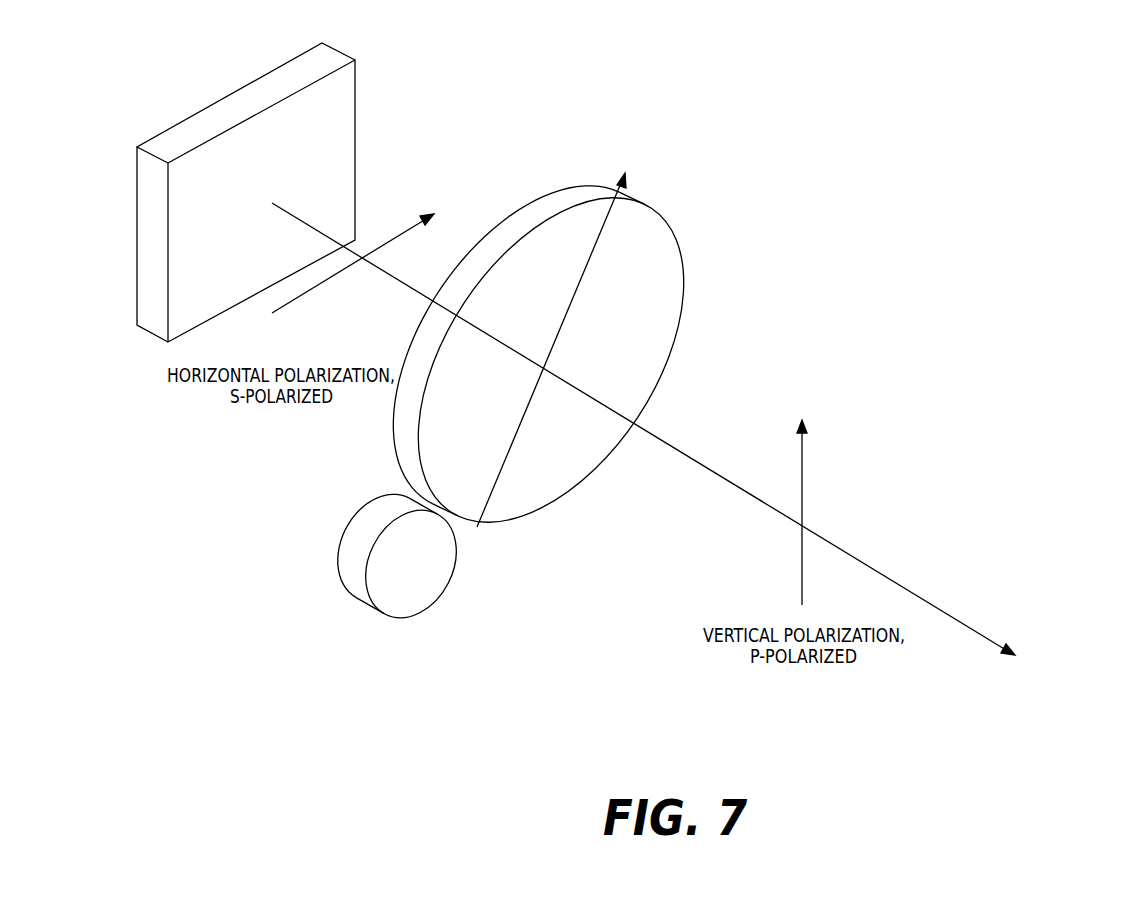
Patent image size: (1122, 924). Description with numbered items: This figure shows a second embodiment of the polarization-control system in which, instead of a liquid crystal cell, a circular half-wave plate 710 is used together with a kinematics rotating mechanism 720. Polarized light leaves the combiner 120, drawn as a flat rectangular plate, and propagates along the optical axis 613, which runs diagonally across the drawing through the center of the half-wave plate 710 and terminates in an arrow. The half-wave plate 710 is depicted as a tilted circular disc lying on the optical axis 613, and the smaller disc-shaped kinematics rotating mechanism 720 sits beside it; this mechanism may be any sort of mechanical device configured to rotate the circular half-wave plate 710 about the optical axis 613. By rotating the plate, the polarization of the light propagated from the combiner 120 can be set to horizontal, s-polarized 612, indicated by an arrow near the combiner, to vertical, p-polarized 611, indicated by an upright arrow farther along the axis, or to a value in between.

The combiner 120 is at (355, 87).
The s-polarized light 612 is at (407, 228).
The circular half-wave plate 710 is at (560, 488).
The kinematics rotating mechanism 720 is at (400, 620).
The p-polarized light 611 is at (803, 465).
The optical axis 613 is at (990, 640).